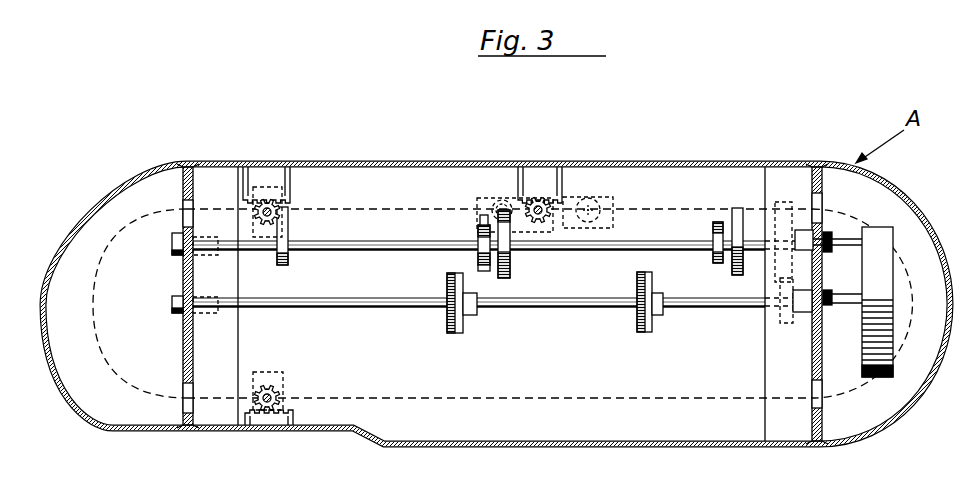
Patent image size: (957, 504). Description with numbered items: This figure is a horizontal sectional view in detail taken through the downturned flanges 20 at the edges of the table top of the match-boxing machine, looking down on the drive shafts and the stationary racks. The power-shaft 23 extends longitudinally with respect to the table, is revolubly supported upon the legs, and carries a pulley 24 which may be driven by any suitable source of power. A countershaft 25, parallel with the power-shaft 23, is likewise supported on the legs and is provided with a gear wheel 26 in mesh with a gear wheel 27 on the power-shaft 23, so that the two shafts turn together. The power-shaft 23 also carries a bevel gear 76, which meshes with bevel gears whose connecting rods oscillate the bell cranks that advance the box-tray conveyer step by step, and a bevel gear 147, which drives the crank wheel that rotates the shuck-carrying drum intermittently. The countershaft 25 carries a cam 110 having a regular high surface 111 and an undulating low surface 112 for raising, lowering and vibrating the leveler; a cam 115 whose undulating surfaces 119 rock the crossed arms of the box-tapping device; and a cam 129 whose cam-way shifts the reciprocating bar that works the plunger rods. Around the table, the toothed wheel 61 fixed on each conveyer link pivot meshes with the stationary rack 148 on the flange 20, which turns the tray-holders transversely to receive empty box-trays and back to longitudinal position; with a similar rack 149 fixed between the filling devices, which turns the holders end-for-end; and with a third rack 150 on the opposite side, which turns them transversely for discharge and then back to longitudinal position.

The downturned flanges 20 is at (410, 168).
The power-shaft 23 is at (735, 301).
The pulley 24 is at (878, 260).
The countershaft 25 is at (620, 246).
The gear wheel 26 is at (779, 223).
The gear wheel 27 is at (785, 318).
The toothed wheel 61 is at (262, 222).
The bevel gear 76 is at (638, 332).
The cam 110 is at (605, 243).
The regular high surface 111 is at (506, 199).
The undulating low surface 112 is at (568, 291).
The cam 115 is at (478, 254).
The undulating surfaces 119 is at (482, 226).
The cam 129 is at (288, 229).
The bevel gear 147 is at (457, 333).
The stationary rack 148 is at (270, 173).
The rack 149 is at (535, 172).
The third rack 150 is at (272, 416).